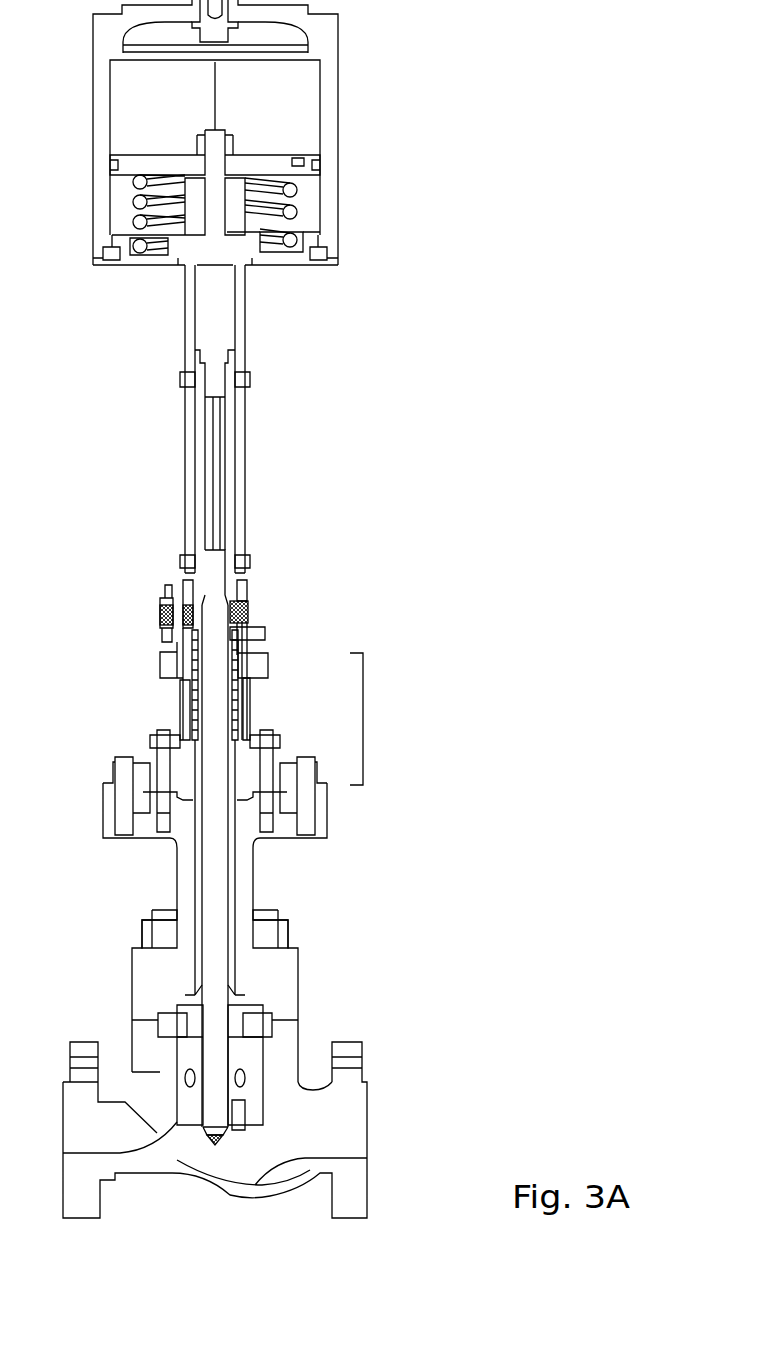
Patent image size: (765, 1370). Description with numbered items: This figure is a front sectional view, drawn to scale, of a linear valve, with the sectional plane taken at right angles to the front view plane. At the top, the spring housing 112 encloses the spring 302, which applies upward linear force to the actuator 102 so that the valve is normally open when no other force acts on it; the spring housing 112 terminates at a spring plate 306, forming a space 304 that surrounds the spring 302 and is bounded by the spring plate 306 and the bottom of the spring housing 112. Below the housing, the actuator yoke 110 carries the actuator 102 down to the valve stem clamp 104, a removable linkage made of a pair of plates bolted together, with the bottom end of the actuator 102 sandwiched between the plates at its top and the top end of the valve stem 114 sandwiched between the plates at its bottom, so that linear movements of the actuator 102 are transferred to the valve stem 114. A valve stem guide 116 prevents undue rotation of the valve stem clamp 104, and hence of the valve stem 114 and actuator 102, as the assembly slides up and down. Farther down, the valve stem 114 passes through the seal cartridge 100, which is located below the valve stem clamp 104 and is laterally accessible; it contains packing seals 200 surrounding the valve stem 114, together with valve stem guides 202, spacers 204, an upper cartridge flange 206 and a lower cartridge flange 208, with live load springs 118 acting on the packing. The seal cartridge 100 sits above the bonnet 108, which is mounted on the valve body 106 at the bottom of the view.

The seal cartridge 100 is at (363, 715).
The actuator 102 is at (207, 318).
The valve stem clamp 104 is at (233, 462).
The valve body 106 is at (298, 1035).
The bonnet 108 is at (177, 870).
The actuator yoke 110 is at (247, 318).
The spring housing 112 is at (338, 103).
The valve stem 114 is at (215, 875).
The valve stem guide 116 is at (218, 415).
The live load springs 118 is at (250, 608).
The packing seals 200 is at (240, 675).
The valve stem guides 202 is at (242, 645).
The spacers 204 is at (240, 712).
The upper cartridge flange 206 is at (160, 665).
The lower cartridge flange 208 is at (148, 755).
The spring 302 is at (295, 213).
The space 304 is at (310, 185).
The spring plate 306 is at (298, 162).